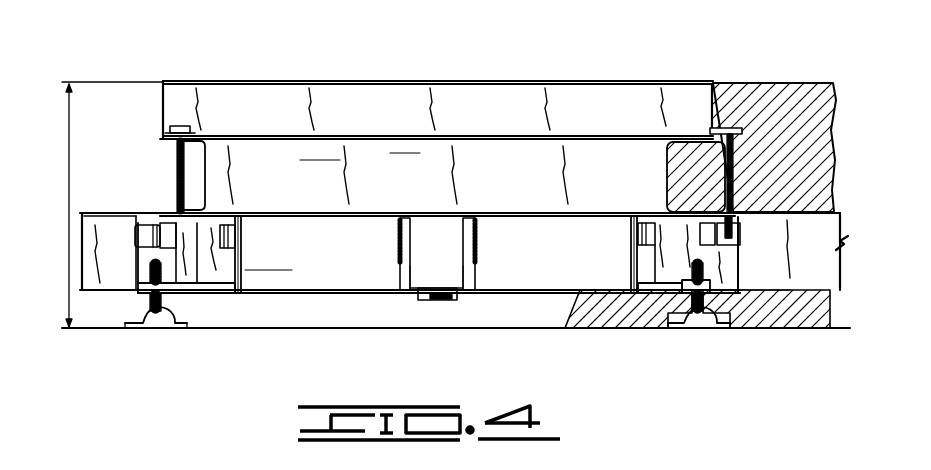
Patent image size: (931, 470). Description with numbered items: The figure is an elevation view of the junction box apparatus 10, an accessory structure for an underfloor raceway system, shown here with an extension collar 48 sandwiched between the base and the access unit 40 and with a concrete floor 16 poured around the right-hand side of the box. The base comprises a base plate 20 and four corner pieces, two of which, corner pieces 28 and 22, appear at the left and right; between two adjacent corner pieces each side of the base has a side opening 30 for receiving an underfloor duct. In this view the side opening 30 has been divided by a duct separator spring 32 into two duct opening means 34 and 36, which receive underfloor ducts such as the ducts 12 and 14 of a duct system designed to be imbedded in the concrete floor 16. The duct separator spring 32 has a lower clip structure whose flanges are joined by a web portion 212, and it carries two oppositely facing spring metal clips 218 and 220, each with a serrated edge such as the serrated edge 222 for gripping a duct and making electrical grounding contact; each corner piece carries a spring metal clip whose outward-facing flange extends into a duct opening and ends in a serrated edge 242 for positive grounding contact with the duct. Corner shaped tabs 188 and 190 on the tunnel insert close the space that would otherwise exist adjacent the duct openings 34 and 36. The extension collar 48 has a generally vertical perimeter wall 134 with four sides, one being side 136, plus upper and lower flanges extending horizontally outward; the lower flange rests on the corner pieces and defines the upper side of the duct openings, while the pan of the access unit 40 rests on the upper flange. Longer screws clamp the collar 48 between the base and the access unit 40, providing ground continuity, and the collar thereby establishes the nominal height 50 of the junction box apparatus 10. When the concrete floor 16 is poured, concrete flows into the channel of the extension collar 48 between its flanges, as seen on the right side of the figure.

The junction box apparatus 10 is at (456, 179).
The access unit 40 is at (603, 74).
The underfloor duct 12 is at (108, 275).
The underfloor duct 14 is at (777, 272).
The concrete floor 16 is at (780, 113).
The base plate 20 is at (310, 294).
The corner piece 22 is at (728, 267).
The corner piece 28 is at (140, 297).
The side opening 30 is at (252, 296).
The duct separator spring 32 is at (453, 268).
The duct opening 34 is at (288, 272).
The duct opening 36 is at (556, 263).
The extension collar 48 is at (402, 153).
The nominal height 50 is at (74, 170).
The perimeter wall 134 is at (352, 98).
The side of perimeter wall 136 is at (317, 160).
The corner shaped tab 188 is at (300, 130).
The corner shaped tab 190 is at (607, 222).
The web portion 212 is at (447, 301).
The spring metal clip 218 is at (409, 277).
The spring metal clip 220 is at (477, 272).
The serrated edge 222 is at (400, 240).
The serrated edge 242 is at (250, 234).